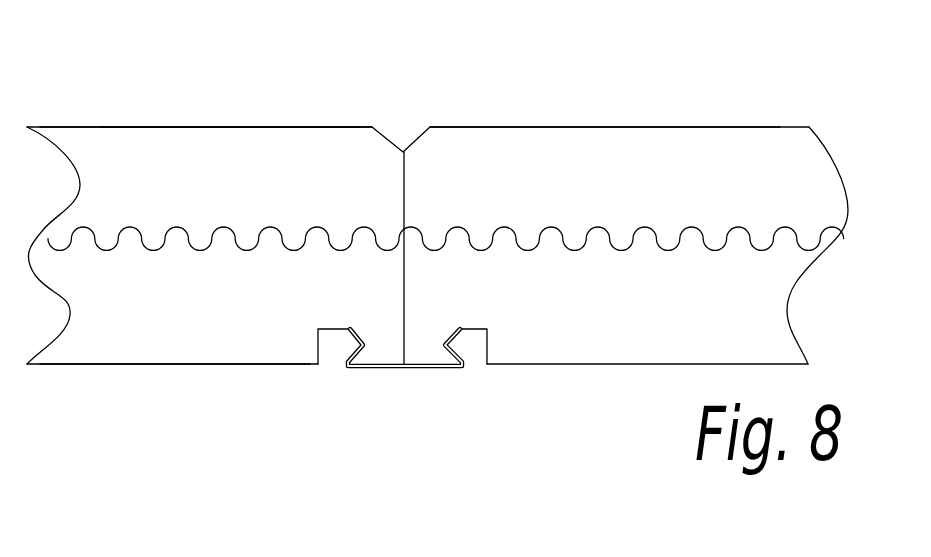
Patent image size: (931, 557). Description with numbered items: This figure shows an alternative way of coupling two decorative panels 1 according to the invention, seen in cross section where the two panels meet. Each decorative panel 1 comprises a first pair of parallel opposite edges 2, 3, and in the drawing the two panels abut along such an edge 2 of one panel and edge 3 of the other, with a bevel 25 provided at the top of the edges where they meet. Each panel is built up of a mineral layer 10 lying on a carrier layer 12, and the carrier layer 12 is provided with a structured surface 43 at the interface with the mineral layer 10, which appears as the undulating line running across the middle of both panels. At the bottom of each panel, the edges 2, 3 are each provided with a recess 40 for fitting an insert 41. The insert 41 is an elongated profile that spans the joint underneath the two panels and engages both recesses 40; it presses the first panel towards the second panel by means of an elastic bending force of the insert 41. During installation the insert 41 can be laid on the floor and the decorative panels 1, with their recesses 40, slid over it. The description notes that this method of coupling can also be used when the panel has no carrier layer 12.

The decorative panel 1 is at (258, 160).
The edge of first pair of parallel opposite edges 2 is at (510, 67).
The edge of first pair of parallel opposite edges 3 is at (297, 80).
The mineral layer 10 is at (160, 180).
The carrier layer 12 is at (202, 313).
The bevel 25 is at (417, 132).
The recess 40 is at (333, 349).
The insert 41 is at (383, 368).
The structured surface 43 is at (655, 250).